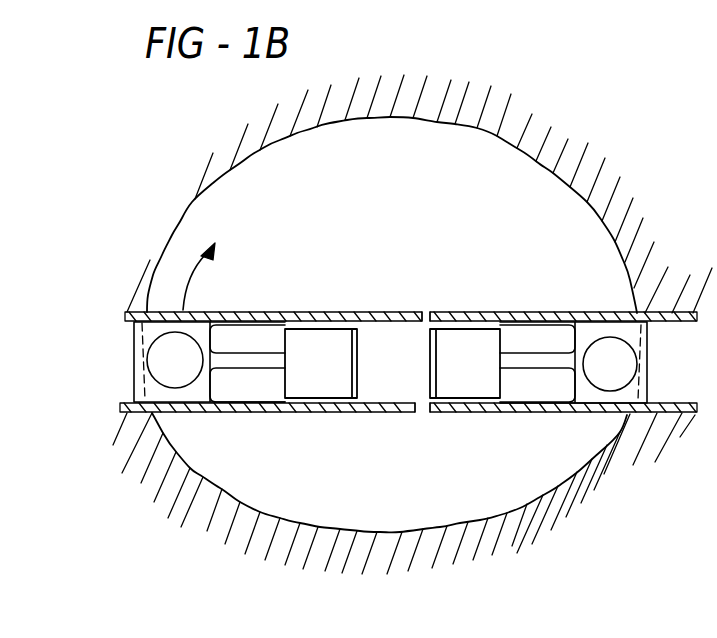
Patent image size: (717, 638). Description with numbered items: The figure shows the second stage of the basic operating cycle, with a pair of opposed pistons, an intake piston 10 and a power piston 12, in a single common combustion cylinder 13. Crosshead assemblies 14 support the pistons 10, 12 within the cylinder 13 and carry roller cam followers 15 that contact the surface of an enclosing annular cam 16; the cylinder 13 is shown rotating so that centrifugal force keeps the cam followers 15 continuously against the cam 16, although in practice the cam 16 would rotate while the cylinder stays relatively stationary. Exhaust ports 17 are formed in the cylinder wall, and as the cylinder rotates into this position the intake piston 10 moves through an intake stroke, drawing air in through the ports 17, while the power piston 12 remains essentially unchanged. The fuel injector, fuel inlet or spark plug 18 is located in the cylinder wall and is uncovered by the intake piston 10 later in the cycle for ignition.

The intake piston 10 is at (317, 337).
The power piston 12 is at (473, 378).
The combustion cylinder 13 is at (680, 413).
The crosshead assemblies 14 is at (233, 413).
The roller cam followers 15 is at (160, 360).
The annular cam 16 is at (421, 118).
The exhaust ports 17 is at (427, 310).
The fuel injector 18 is at (352, 413).